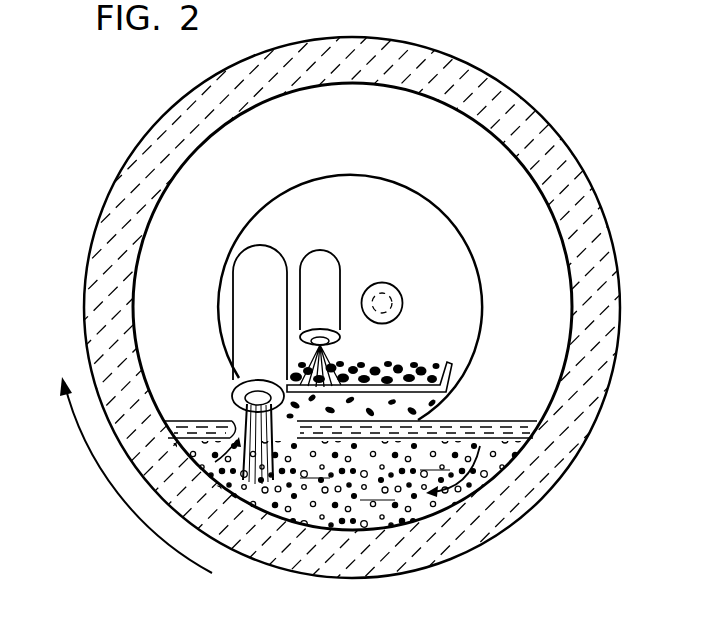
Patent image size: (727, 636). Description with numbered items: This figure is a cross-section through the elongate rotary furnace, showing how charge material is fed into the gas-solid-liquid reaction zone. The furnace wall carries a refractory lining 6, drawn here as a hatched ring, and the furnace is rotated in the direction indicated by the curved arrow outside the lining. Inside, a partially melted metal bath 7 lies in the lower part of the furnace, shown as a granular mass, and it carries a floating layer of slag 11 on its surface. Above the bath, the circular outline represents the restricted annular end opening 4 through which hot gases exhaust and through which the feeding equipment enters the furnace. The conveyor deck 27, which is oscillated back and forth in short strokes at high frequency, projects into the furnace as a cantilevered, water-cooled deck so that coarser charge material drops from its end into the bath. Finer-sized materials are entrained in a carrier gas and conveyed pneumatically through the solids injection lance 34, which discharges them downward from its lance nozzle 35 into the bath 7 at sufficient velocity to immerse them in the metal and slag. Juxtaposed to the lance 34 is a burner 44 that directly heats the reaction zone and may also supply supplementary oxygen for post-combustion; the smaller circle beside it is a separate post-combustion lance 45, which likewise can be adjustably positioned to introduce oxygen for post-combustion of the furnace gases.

The annular end opening 4 is at (410, 232).
The refractory lining 6 is at (549, 461).
The partially melted metal bath 7 is at (437, 438).
The floating layer of slag 11 is at (477, 425).
The conveyor deck 27 is at (447, 373).
The solids injection lance 34 is at (258, 262).
The lance nozzle 35 is at (243, 383).
The burner 44 is at (315, 268).
The post-combustion lance 45 is at (388, 292).